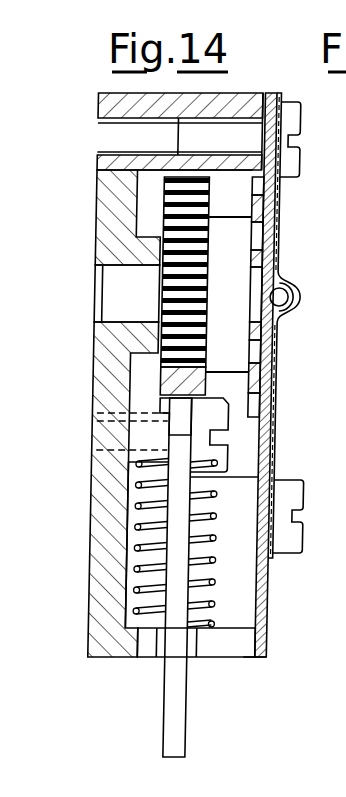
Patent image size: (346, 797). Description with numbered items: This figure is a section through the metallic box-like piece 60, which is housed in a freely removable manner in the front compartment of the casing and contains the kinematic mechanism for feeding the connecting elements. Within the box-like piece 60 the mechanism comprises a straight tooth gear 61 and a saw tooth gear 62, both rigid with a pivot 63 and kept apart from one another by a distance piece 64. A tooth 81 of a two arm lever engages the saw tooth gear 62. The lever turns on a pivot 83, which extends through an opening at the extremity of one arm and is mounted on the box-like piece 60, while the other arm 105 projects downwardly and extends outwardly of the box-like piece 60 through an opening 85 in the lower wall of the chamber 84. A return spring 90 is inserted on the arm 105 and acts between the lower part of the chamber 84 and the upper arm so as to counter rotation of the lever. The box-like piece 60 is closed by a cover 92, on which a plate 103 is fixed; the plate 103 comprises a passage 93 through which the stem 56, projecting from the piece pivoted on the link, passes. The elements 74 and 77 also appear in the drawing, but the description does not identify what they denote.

The stem 56 is at (286, 296).
The box-like piece 60 is at (115, 657).
The straight tooth gear 61 is at (264, 380).
The saw tooth gear 62 is at (163, 383).
The pivot 63 is at (118, 288).
The distance piece 64 is at (243, 240).
The frame 74 is at (294, 644).
The knob 77 is at (309, 516).
The tooth 81 is at (168, 407).
The pivot 83 is at (213, 450).
The chamber 84 is at (128, 582).
The opening 85 is at (188, 652).
The return spring 90 is at (125, 550).
The cover 92 is at (262, 603).
The passage 93 is at (290, 313).
The plate 103 is at (275, 438).
The arm 105 is at (177, 715).